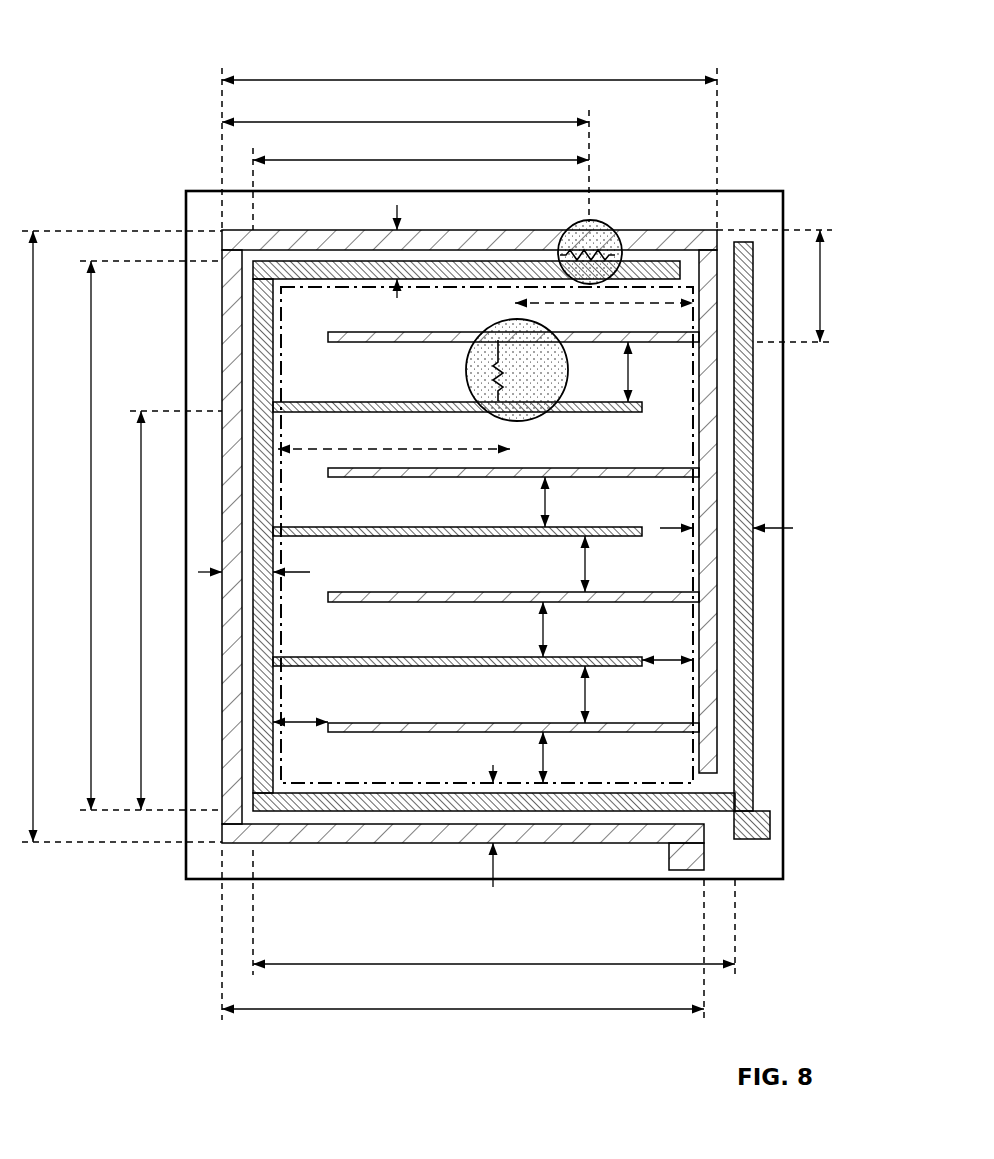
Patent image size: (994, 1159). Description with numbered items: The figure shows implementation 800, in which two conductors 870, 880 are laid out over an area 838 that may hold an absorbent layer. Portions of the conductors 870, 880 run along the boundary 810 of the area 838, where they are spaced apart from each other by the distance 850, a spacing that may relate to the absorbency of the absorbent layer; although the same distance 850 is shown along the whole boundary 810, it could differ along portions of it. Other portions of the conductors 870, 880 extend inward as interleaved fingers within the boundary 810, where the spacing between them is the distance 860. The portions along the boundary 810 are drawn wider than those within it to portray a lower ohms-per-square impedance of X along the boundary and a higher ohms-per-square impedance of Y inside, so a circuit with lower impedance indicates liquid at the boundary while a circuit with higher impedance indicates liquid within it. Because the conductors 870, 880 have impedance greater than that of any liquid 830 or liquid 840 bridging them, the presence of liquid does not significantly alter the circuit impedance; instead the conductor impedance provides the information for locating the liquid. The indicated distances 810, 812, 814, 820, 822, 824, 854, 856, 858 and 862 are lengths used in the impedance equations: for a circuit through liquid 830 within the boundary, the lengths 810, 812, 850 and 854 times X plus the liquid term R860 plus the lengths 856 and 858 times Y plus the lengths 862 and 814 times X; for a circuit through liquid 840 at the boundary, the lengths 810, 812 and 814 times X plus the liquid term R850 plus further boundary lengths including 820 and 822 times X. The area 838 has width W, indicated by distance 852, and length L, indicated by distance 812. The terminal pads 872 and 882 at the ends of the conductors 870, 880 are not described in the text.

The implementation 800 is at (98, 24).
The boundary 810 is at (457, 620).
The distance 812 is at (52, 536).
The distance 814 is at (447, 122).
The distance 820 is at (430, 160).
The distance 822 is at (110, 535).
The distance 824 is at (515, 964).
The liquid 830 is at (490, 370).
The area 838 is at (765, 191).
The liquid 840 is at (597, 244).
The distance 850 is at (546, 587).
The distance 852 is at (464, 80).
The distance 854 is at (822, 283).
The distance 856 is at (647, 303).
The distance 858 is at (397, 448).
The distance 860 is at (630, 378).
The distance 862 is at (160, 610).
The conductor 870 is at (616, 845).
The first electrode terminal 872 is at (668, 858).
The conductor 880 is at (753, 790).
The second electrode terminal 882 is at (752, 840).
The impedance R850 is at (562, 215).
The impedance R860 is at (525, 370).